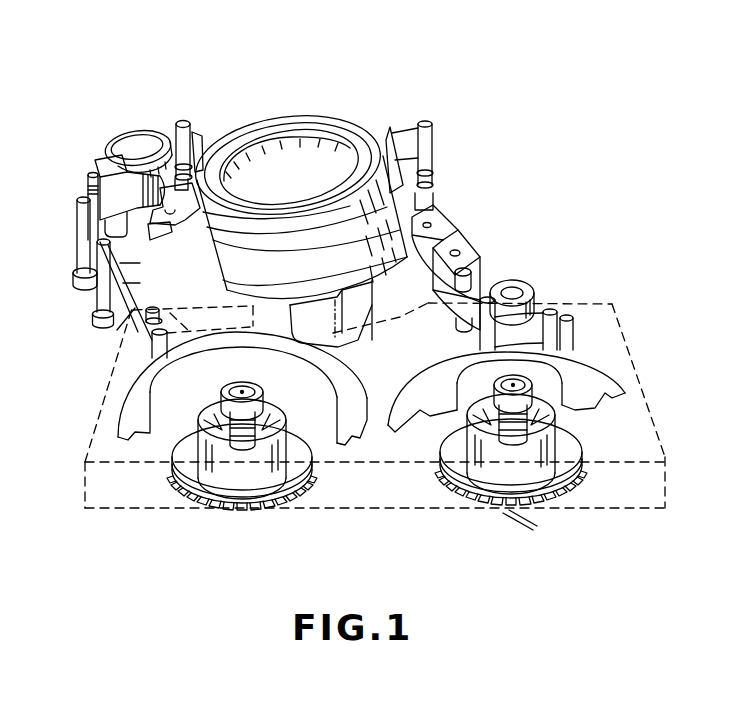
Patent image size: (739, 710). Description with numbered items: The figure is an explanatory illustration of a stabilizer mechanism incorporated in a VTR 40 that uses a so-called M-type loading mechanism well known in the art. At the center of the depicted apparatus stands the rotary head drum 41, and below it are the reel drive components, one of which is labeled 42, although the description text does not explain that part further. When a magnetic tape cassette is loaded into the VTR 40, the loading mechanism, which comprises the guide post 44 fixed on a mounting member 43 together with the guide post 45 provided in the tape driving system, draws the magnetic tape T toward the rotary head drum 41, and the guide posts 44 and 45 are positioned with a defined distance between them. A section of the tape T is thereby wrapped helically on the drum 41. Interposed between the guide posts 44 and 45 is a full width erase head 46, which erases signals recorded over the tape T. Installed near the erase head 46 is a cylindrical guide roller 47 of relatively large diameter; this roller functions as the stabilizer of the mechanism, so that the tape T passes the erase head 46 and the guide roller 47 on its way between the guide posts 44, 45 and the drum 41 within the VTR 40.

The VTR 40 is at (418, 98).
The rotary head drum 41 is at (303, 112).
The reel gear 42 is at (238, 523).
The mounting member 43 is at (183, 233).
The guide post 44 is at (182, 122).
The guide post 45 is at (96, 186).
The full width erase head 46 is at (95, 160).
The cylindrical guide roller 47 is at (122, 150).
The magnetic tape T is at (165, 307).